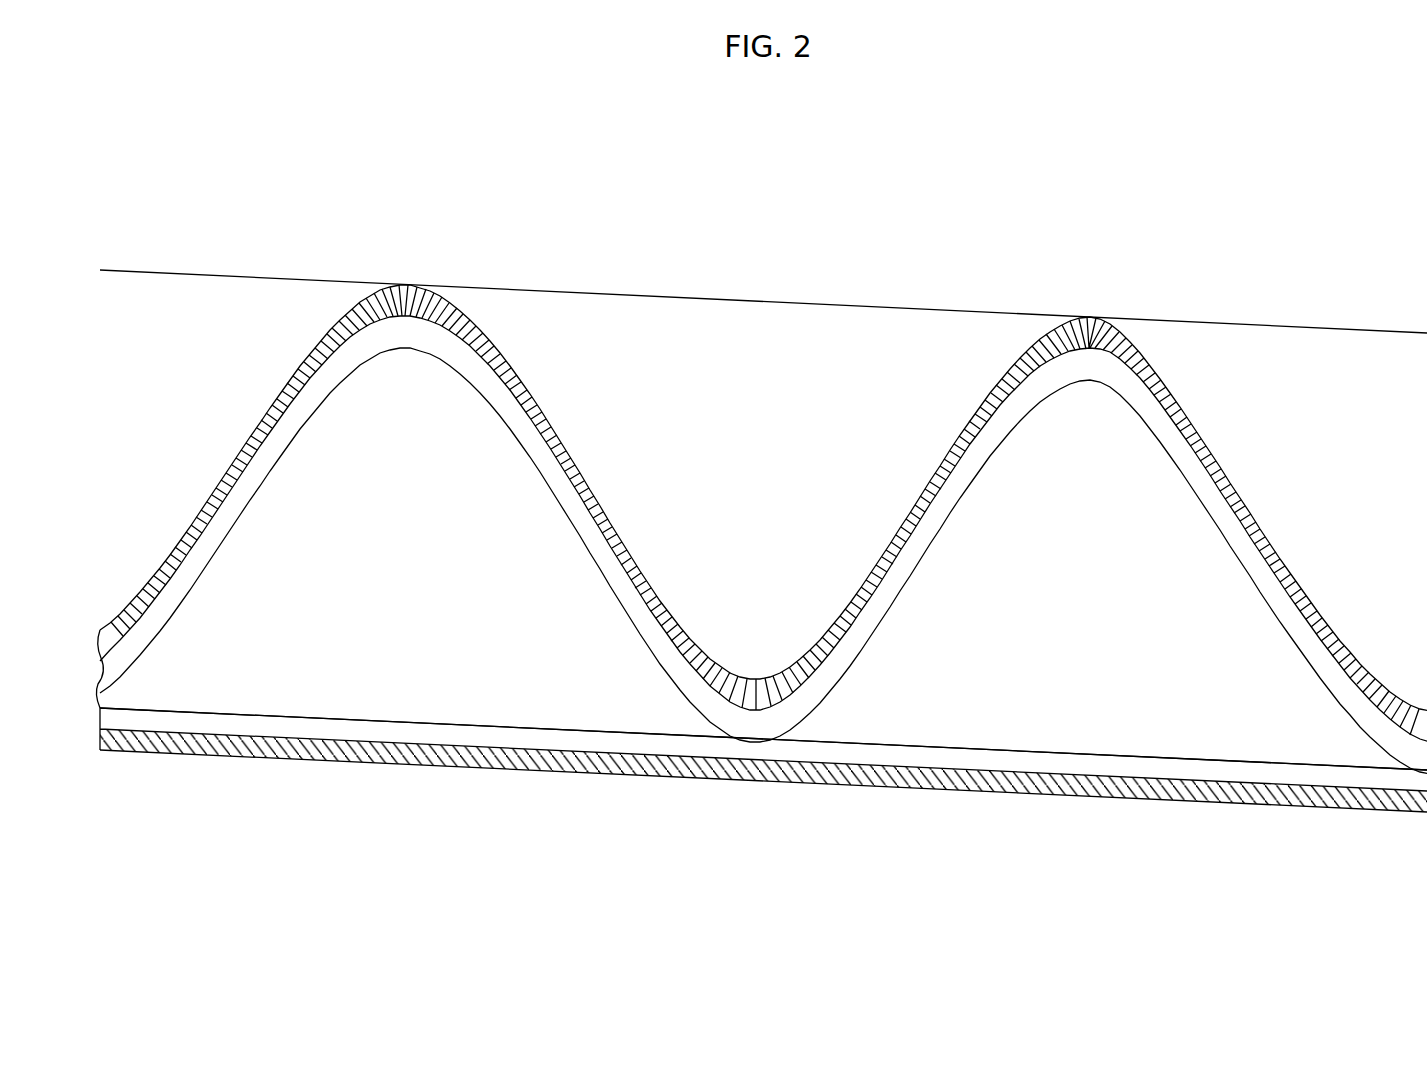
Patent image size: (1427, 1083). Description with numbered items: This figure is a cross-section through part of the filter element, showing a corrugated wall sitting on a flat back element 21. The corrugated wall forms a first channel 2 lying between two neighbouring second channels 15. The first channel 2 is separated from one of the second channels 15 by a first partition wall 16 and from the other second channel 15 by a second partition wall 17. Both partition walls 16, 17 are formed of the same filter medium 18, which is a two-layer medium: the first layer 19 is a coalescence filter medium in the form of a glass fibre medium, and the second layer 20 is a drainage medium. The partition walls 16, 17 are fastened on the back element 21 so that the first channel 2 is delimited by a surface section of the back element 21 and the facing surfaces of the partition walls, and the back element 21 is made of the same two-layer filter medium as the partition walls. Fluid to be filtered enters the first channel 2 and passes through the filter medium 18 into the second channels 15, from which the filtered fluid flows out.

The first channel 2 is at (910, 690).
The second channel 15 is at (305, 312).
The first partition wall 16 is at (157, 600).
The second partition wall 17 is at (562, 443).
The filter medium 18 is at (1267, 560).
The first layer 19 is at (242, 493).
The second layer 20 is at (227, 468).
The back element 21 is at (1217, 782).